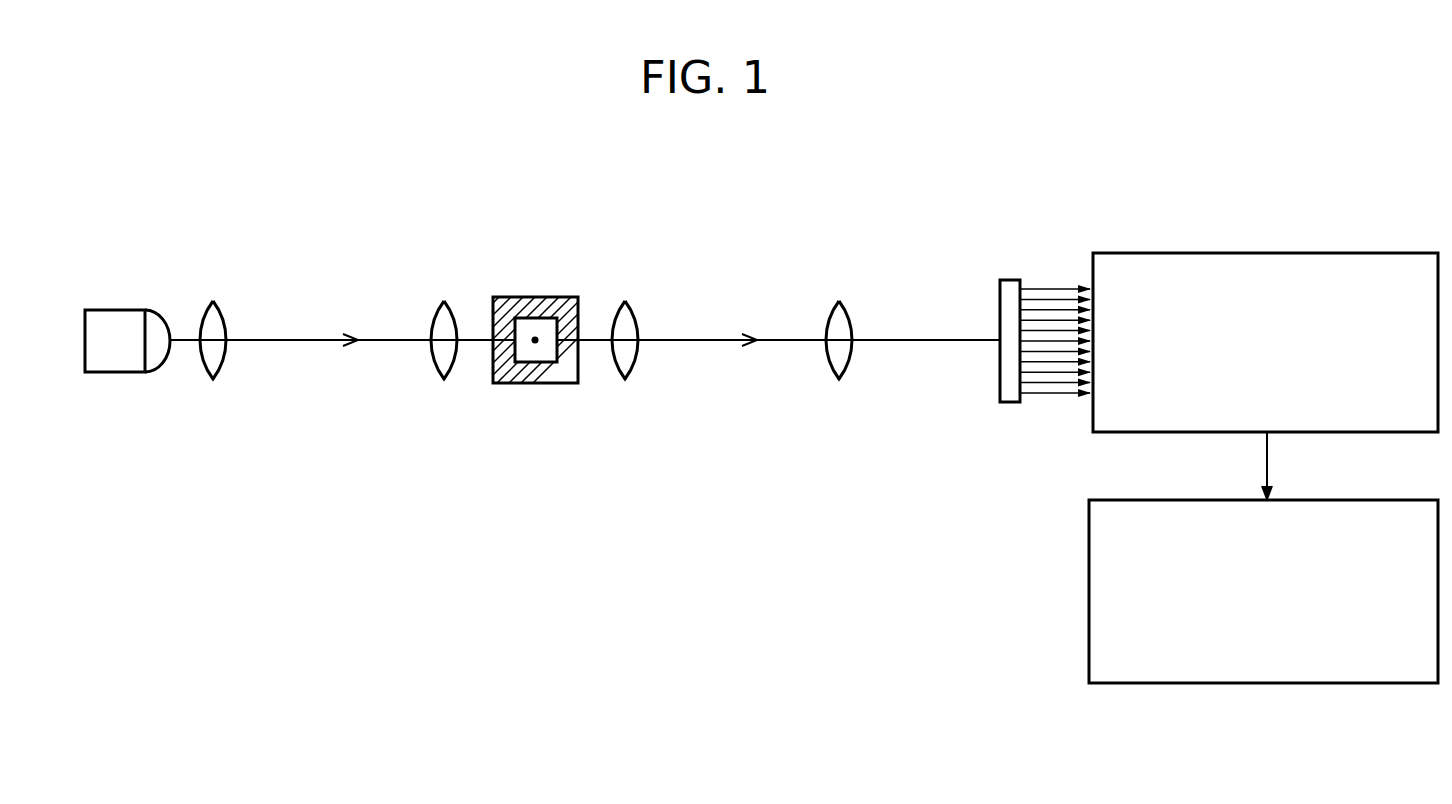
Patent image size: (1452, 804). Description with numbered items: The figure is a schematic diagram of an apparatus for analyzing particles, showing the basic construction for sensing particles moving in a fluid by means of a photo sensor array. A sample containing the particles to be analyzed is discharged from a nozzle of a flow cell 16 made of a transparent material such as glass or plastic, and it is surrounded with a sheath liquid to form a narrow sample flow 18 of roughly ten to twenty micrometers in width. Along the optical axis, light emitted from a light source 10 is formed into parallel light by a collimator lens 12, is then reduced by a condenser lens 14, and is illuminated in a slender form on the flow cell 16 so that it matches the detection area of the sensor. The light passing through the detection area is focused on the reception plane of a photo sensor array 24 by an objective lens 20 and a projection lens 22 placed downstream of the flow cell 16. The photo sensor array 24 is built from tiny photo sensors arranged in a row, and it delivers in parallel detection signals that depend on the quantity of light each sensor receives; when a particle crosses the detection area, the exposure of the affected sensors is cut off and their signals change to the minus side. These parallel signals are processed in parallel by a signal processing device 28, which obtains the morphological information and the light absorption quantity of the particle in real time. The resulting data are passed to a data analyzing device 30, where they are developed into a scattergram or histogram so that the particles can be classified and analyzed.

The light source 10 is at (129, 310).
The collimator lens 12 is at (222, 308).
The condenser lens 14 is at (435, 318).
The flow cell 16 is at (495, 296).
The sample flow 18 is at (535, 340).
The objective lens 20 is at (631, 318).
The projection lens 22 is at (845, 312).
The photo sensor array 24 is at (1003, 280).
The signal processing device 28 is at (1273, 252).
The data analyzing device 30 is at (1238, 684).